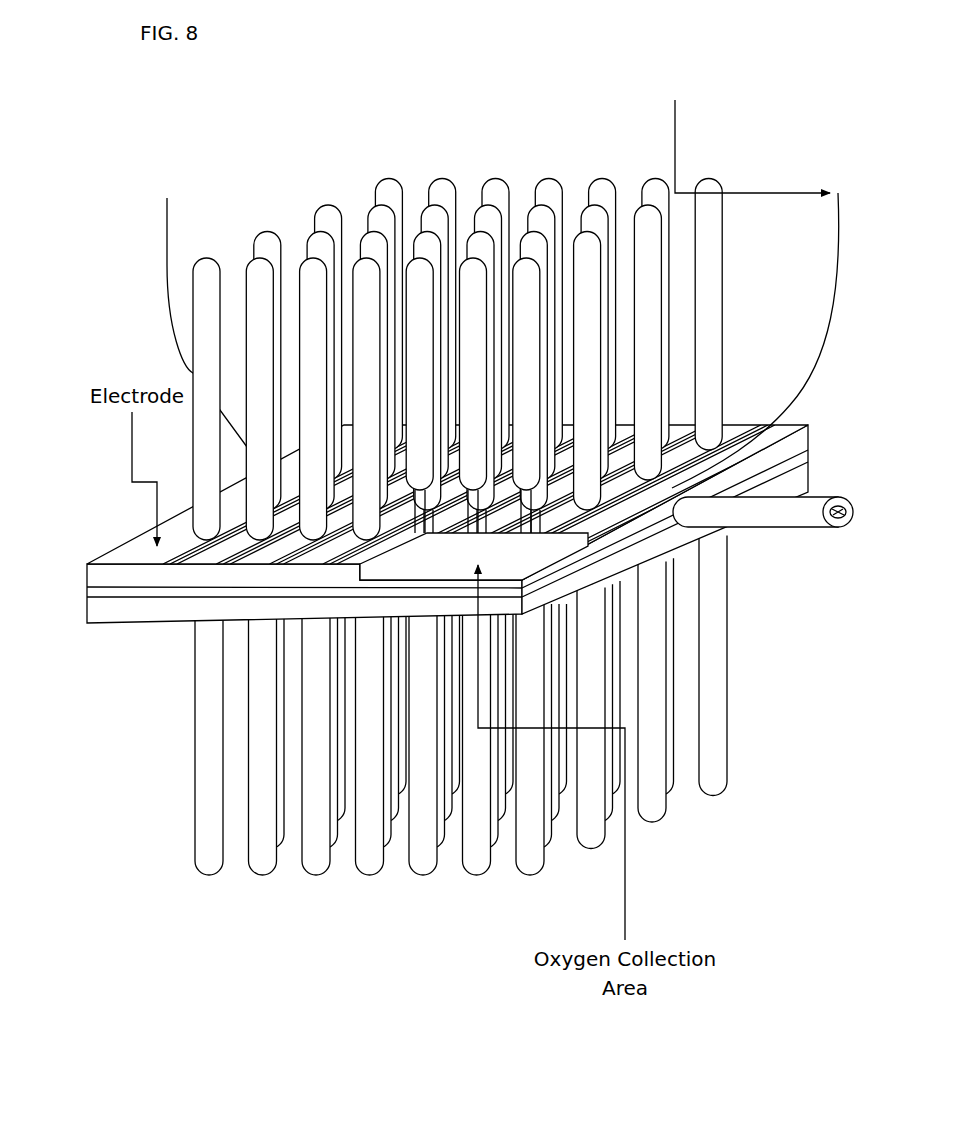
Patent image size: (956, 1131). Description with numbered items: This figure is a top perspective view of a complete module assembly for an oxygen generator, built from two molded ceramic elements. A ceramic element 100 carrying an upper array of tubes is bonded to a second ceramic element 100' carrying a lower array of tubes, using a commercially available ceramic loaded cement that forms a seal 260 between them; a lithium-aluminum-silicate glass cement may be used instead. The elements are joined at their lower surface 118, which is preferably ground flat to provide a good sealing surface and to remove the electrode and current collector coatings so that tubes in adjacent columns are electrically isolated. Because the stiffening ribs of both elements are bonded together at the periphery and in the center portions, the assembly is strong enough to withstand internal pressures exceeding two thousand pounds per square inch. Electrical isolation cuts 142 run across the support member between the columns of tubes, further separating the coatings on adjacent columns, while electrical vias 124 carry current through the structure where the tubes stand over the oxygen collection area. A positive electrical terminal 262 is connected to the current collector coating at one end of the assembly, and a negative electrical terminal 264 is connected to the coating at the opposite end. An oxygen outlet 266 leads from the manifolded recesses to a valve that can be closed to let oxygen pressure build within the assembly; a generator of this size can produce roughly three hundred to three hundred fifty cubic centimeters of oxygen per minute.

The ceramic element 100 is at (745, 314).
The ceramic element 100' is at (750, 665).
The lower surface 118 is at (138, 546).
The electrical vias 124 is at (495, 540).
The electrical isolation cuts 142 is at (168, 571).
The seal 260 is at (86, 590).
The positive electrical terminal 262 is at (171, 291).
The negative electrical terminal 264 is at (706, 253).
The oxygen outlet 266 is at (755, 531).